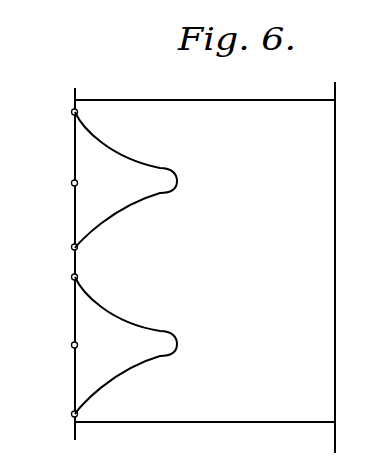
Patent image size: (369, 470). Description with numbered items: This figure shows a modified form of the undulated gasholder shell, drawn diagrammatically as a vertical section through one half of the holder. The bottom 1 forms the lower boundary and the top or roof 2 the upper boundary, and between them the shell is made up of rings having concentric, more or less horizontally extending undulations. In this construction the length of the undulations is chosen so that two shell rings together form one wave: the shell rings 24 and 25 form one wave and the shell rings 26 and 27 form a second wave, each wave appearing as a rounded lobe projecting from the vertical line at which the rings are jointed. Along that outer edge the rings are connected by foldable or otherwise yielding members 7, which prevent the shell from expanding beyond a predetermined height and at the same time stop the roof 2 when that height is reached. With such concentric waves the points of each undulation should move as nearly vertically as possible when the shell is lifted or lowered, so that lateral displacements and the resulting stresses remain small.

The bottom 1 is at (243, 422).
The top or roof 2 is at (245, 97).
The foldable or otherwise yielding members 7 is at (74, 156).
The shell ring 24 is at (101, 382).
The shell ring 25 is at (108, 310).
The shell ring 26 is at (115, 197).
The shell ring 27 is at (124, 154).